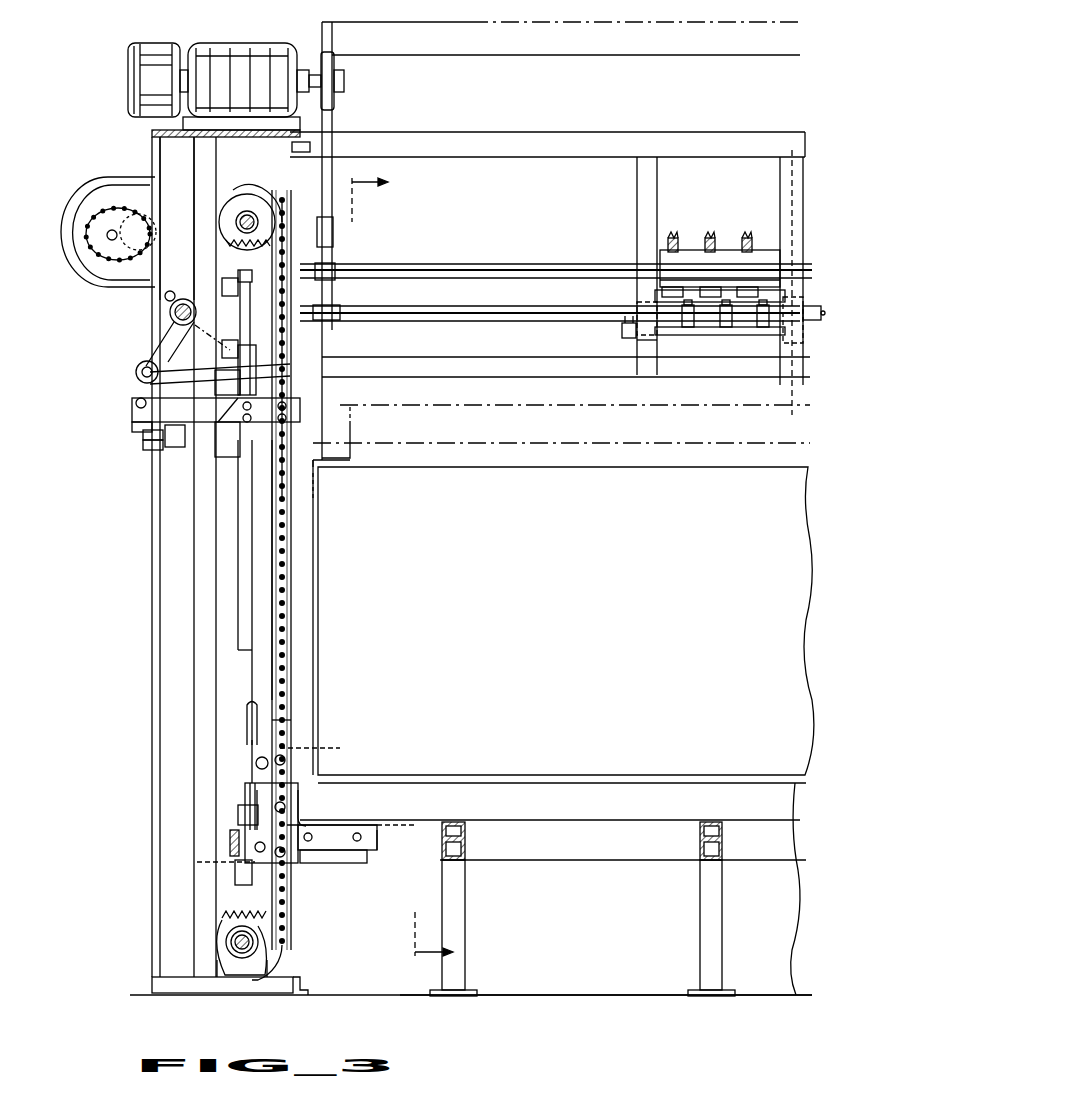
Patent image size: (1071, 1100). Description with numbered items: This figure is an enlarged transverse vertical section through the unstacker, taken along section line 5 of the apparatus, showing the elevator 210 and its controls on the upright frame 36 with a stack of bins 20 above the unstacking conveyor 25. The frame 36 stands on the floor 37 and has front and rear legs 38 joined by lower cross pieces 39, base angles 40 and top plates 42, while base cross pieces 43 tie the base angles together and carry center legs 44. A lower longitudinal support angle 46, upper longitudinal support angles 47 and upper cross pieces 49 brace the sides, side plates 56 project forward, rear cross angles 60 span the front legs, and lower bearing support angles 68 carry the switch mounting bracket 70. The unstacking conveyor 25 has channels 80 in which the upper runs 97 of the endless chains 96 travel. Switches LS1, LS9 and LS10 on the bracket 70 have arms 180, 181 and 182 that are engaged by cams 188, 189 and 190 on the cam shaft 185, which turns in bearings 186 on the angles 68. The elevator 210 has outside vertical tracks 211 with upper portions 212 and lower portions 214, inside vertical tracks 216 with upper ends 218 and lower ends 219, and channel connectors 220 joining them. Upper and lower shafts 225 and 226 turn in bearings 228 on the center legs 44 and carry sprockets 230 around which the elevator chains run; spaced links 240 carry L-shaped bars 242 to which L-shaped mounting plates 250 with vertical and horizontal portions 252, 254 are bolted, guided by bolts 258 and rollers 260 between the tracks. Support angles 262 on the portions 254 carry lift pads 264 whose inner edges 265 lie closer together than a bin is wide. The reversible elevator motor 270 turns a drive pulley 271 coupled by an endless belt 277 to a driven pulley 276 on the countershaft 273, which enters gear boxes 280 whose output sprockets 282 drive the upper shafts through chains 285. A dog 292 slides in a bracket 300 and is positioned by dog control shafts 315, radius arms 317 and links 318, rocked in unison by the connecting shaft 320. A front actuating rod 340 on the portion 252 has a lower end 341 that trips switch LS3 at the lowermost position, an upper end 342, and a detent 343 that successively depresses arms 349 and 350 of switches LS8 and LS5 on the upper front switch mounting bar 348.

The bins 20 is at (640, 445).
The unstacking conveyor 25 is at (696, 862).
The upright frame 36 is at (104, 130).
The floor 37 is at (604, 992).
The front and rear legs 38 is at (288, 640).
The lower cross pieces 39 is at (592, 923).
The base angles 40 is at (305, 988).
The top plates 42 is at (215, 145).
The base cross pieces 43 is at (275, 985).
The center legs 44 is at (195, 548).
The lower longitudinal support angle 46 is at (232, 840).
The upper longitudinal support angles 47 is at (232, 458).
The upper cross pieces 49 is at (152, 410).
The side plates 56 is at (158, 160).
The rear cross angles 60 is at (478, 137).
The lower horizontal bearing support angles 68 is at (645, 356).
The switch mounting bracket 70 is at (662, 265).
The channels 80 is at (462, 830).
The endless chains 96 is at (463, 850).
The upper runs 97 is at (452, 825).
The switch arm 180 is at (768, 320).
The switch arm 181 is at (688, 327).
The switch arm 182 is at (655, 295).
The cam shaft 185 is at (822, 312).
The bearings 186 is at (630, 302).
The cam 188 is at (763, 327).
The cam 189 is at (725, 327).
The cam 190 is at (650, 345).
The elevator 210 is at (300, 511).
The outside vertical tracks 211 is at (248, 605).
The upper portions 212 is at (250, 380).
The lower portions 214 is at (248, 872).
The inside vertical tracks 216 is at (273, 563).
The upper ends 218 is at (312, 148).
The lower ends 219 is at (285, 968).
The channel connectors 220 is at (262, 586).
The upper shafts 225 is at (250, 205).
The lower shafts 226 is at (258, 942).
The bearings 228 is at (283, 157).
The sprockets 230 is at (240, 240).
The links 240 is at (283, 542).
The L-shaped bars 242 is at (252, 745).
The L-shaped mounting plates 250 is at (296, 827).
The vertical portion 252 is at (253, 795).
The horizontal portion 254 is at (352, 863).
The bolts 258 is at (258, 765).
The rollers 260 is at (300, 750).
The support angles 262 is at (372, 843).
The lift pads 264 is at (372, 826).
The inner edges 265 is at (388, 828).
The reversible elevator motor 270 is at (267, 54).
The drive pulley 271 is at (334, 64).
The countershaft 273 is at (458, 270).
The driven pulley 276 is at (334, 232).
The endless belt 277 is at (340, 92).
The gear boxes 280 is at (112, 185).
The output sprockets 282 is at (106, 236).
The chains 285 is at (100, 212).
The dog 292 is at (355, 418).
The brackets 300 is at (140, 380).
The dog control shafts 315 is at (172, 312).
The radius arms 317 is at (165, 337).
The links 318 is at (160, 348).
The connecting shaft 320 is at (418, 305).
The front actuating rod 340 is at (285, 727).
The lower end 341 is at (260, 808).
The upper end 342 is at (262, 700).
The detent 343 is at (255, 802).
The upper front switch mounting bar 348 is at (216, 410).
The switch arm 349 is at (257, 372).
The switch arm 350 is at (242, 272).
The section line 5 is at (402, 567).
The switch LS1 is at (758, 250).
The switch LS3 is at (238, 812).
The switch LS5 is at (225, 283).
The switch LS8 is at (232, 350).
The switch LS9 is at (720, 250).
The switch LS10 is at (687, 250).